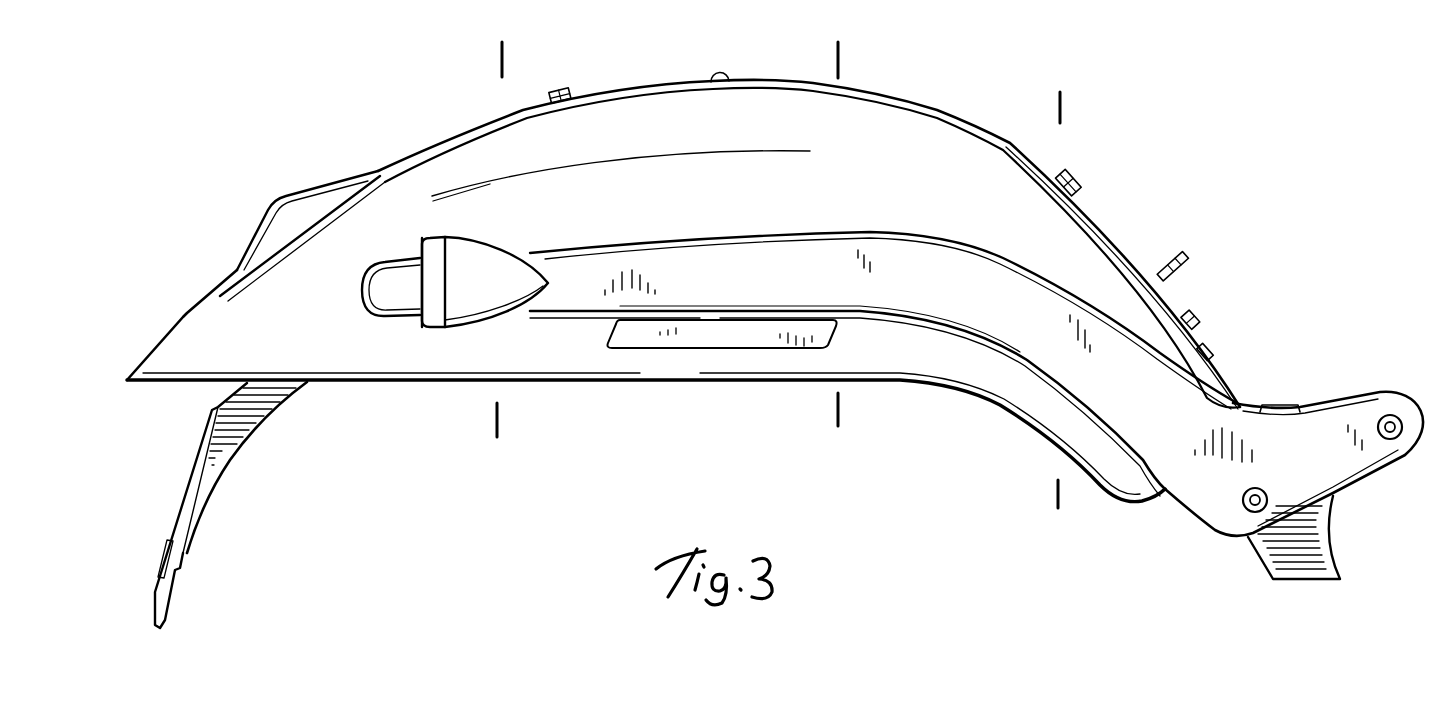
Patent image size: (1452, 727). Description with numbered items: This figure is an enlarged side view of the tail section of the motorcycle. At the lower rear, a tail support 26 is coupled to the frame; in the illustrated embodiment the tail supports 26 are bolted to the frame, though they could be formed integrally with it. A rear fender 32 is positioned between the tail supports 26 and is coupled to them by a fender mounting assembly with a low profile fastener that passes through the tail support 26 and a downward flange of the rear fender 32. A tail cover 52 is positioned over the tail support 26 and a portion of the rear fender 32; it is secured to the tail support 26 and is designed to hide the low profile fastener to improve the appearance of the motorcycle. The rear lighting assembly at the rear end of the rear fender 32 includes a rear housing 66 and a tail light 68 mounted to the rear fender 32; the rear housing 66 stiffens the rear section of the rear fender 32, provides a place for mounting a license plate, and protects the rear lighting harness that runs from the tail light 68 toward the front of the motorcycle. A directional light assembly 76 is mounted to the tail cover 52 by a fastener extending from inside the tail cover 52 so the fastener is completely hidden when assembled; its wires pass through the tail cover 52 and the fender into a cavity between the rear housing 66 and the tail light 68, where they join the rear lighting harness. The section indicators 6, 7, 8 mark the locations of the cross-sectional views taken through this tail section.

The tail support 26 is at (1268, 543).
The rear fender 32 is at (935, 137).
The tail cover 52 is at (918, 243).
The rear housing 66 is at (273, 392).
The tail light 68 is at (317, 197).
The directional light assembly 76 is at (451, 348).
The section line 6- 6 is at (1056, 493).
The section line 7- 7 is at (846, 410).
The section line 8- 8 is at (505, 420).